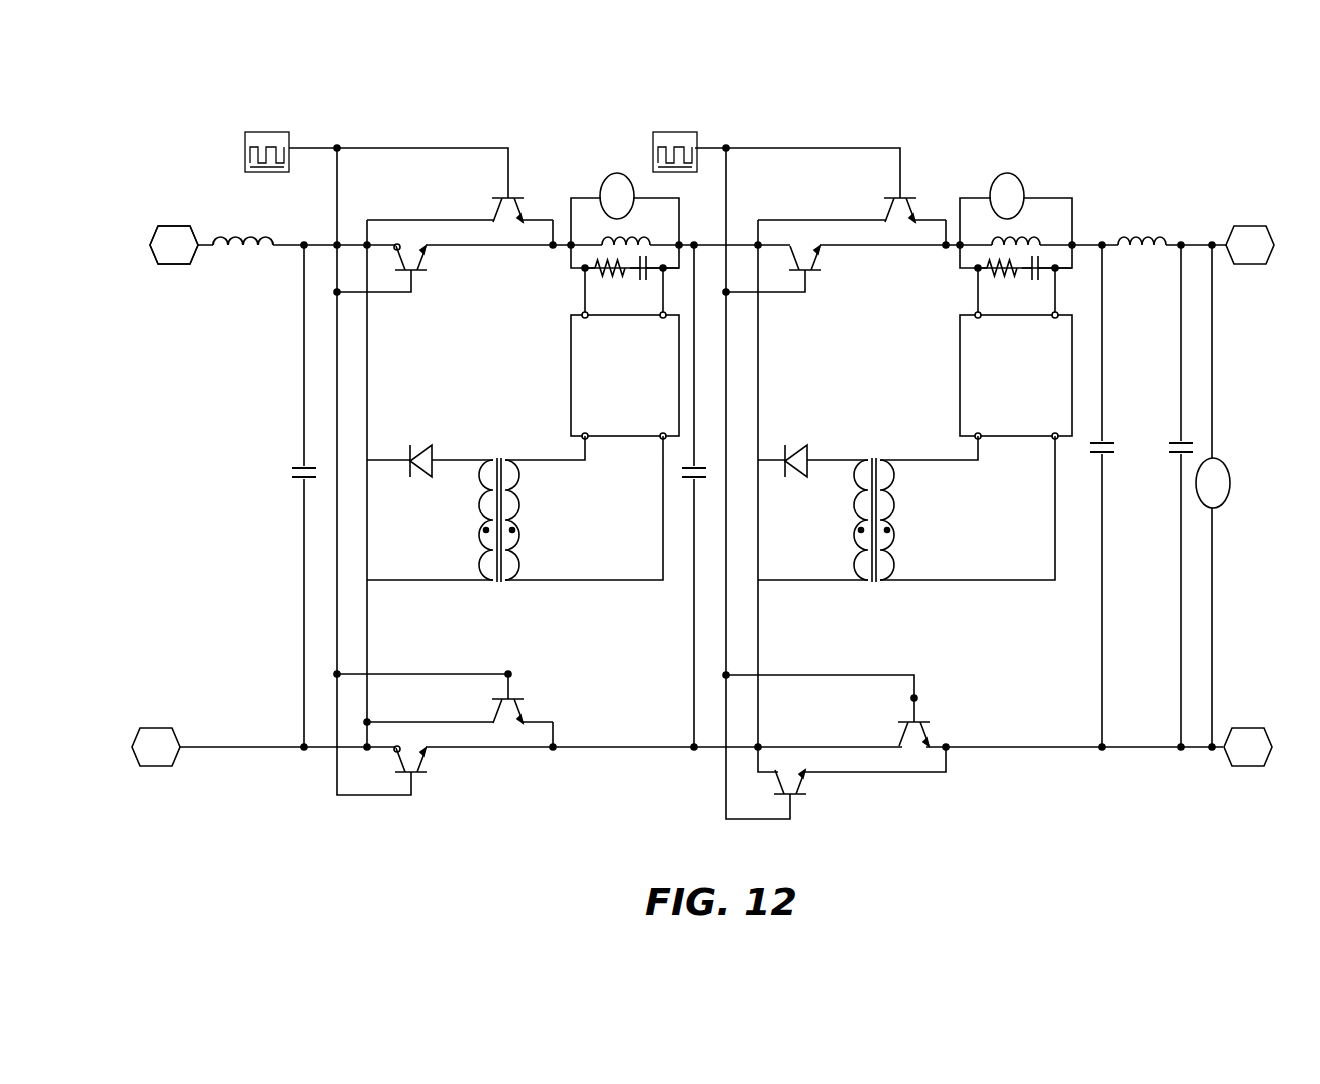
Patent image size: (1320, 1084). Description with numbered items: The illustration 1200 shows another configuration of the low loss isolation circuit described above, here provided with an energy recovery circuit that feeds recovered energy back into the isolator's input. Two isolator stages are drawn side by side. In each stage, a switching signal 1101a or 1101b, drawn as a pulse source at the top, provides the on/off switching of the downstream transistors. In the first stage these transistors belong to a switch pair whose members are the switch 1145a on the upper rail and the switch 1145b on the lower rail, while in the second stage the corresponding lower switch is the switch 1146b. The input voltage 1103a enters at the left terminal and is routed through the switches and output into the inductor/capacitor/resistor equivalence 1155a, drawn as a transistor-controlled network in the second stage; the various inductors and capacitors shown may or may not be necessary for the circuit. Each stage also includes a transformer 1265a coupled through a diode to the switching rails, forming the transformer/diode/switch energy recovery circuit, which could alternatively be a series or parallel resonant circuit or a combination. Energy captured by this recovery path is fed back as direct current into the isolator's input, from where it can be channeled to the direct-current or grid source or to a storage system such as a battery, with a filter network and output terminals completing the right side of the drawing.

The illustration 1200 is at (703, 462).
The switching signal 1101a is at (245, 126).
The switching signal 1101b is at (653, 133).
The input voltage 1103a is at (180, 263).
The switch pair transistor 1145a is at (452, 258).
The switch pair transistor 1145b is at (472, 757).
The inductor/capacitor/resistor equivalence 1155a is at (843, 253).
The switch pair transistor 1146b is at (868, 783).
The transformer 1265a is at (560, 548).